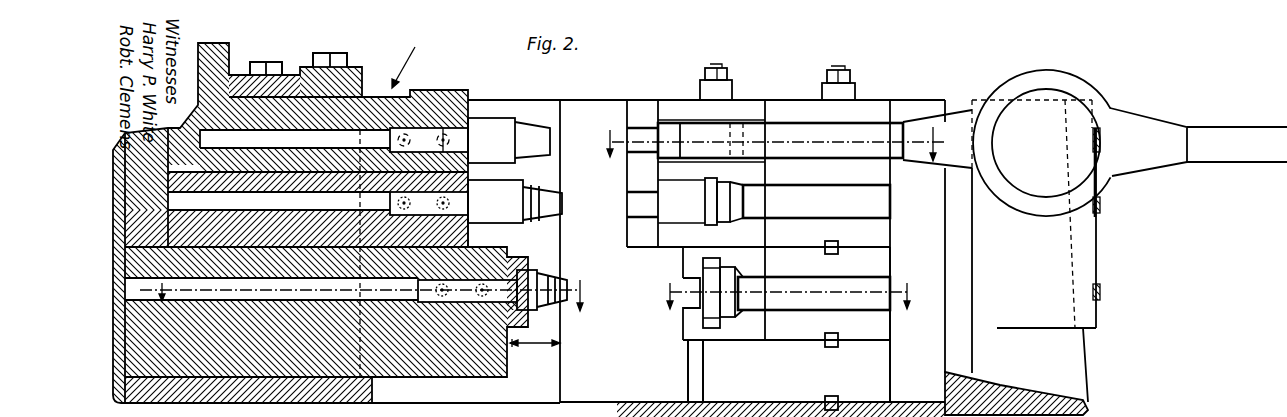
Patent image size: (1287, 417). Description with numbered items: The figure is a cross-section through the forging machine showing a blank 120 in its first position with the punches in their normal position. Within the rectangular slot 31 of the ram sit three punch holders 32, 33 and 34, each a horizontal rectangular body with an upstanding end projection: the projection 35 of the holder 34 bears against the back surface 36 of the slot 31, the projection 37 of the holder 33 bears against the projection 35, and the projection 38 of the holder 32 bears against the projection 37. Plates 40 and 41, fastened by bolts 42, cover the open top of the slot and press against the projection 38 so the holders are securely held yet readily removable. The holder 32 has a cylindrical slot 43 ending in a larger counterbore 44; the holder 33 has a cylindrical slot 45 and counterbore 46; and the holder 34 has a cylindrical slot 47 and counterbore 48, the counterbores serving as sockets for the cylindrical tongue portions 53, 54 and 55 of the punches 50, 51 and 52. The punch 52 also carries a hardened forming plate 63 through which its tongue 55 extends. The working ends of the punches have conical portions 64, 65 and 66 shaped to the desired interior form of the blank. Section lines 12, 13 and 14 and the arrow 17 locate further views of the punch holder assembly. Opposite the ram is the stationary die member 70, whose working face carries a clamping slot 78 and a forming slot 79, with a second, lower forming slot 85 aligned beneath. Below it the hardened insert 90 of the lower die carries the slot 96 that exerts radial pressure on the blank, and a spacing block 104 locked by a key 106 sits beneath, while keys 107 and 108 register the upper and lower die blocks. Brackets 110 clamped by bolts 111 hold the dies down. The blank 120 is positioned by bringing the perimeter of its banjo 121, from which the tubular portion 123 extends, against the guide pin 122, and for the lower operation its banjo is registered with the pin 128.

The section line 12 is at (774, 144).
The section line 13 is at (788, 296).
The section line 14 is at (370, 295).
The tool holder assembly 17 is at (415, 62).
The slot 31 is at (338, 378).
The punch holder 32 is at (334, 110).
The punch holder 33 is at (318, 228).
The punch holder 34 is at (271, 338).
The projection 35 is at (140, 265).
The back surface 36 is at (146, 228).
The projection 37 is at (222, 42).
The projection 38 is at (237, 75).
The plate 40 is at (286, 75).
The plate 41 is at (356, 70).
The bolts 42 is at (266, 62).
The cylindrical slot 43 is at (383, 108).
The counterbore 44 is at (406, 128).
The cylindrical slot 45 is at (334, 151).
The counterbore 46 is at (318, 190).
The cylindrical slot 47 is at (316, 273).
The counterbore 48 is at (473, 316).
The punch 50 is at (495, 118).
The punch 51 is at (495, 201).
The punch 52 is at (528, 278).
The tongue portion 53 is at (437, 128).
The tongue portion 54 is at (429, 203).
The tongue portion 55 is at (477, 278).
The hardened forming plate 63 is at (713, 337).
The conical portion 64 is at (534, 128).
The conical section 65 is at (560, 207).
The conical section 66 is at (562, 284).
The stationary die member 70 is at (729, 103).
The clamping slot 78 is at (792, 105).
The forming slot 79 is at (731, 123).
The forming slot 85 is at (757, 182).
The hardened metallic insert 90 is at (887, 326).
The slot 96 is at (800, 275).
The spacing block 104 is at (868, 367).
The keys 106 is at (838, 400).
The key 107 is at (838, 247).
The key 108 is at (832, 338).
The brackets 110 is at (700, 89).
The bolts 111 is at (708, 62).
The blank 120 is at (973, 112).
The banjo 121 is at (1053, 90).
The guide pin 122 is at (1103, 141).
The lever arm 123 is at (893, 127).
The pin 128 is at (1102, 292).